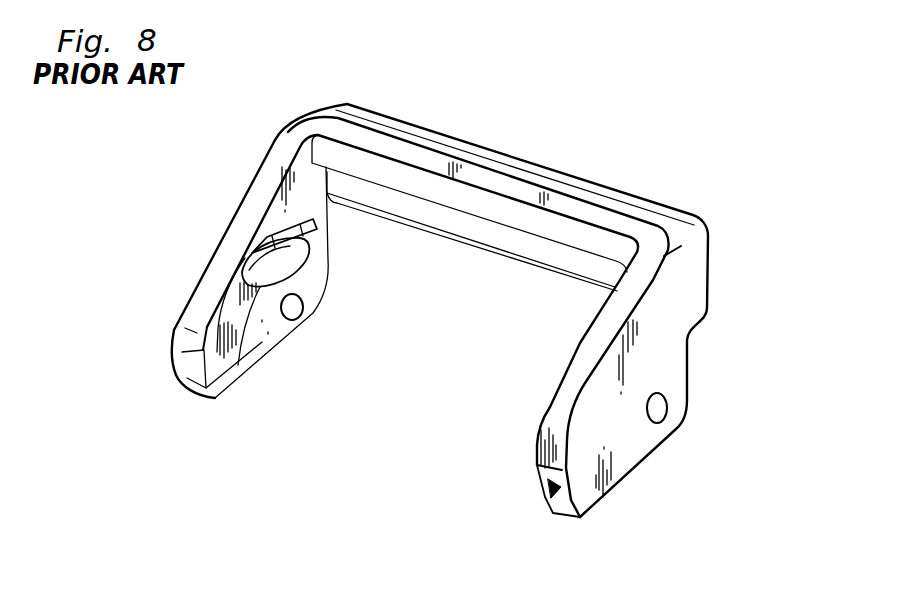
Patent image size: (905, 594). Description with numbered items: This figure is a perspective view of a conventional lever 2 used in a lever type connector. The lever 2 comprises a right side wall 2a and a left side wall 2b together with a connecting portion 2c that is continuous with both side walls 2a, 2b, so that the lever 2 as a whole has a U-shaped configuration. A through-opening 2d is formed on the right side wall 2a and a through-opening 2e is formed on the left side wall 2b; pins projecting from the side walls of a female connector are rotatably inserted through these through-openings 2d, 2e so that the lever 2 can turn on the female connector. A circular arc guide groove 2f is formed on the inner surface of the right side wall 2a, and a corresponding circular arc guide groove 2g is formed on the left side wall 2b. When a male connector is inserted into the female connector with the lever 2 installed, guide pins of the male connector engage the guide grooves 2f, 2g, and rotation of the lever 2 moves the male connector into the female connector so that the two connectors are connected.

The lever 2 is at (577, 164).
The right side wall 2a is at (660, 357).
The left side wall 2b is at (228, 238).
The connecting portion 2c is at (488, 163).
The through-opening 2d is at (668, 408).
The through-opening 2e is at (300, 320).
The circular arc guide groove 2f is at (547, 484).
The circular arc guide groove 2g is at (190, 395).